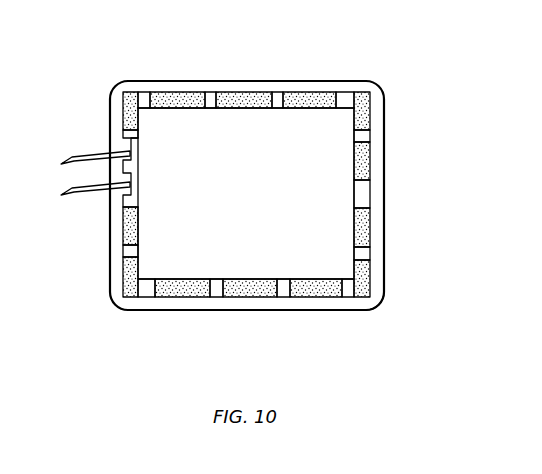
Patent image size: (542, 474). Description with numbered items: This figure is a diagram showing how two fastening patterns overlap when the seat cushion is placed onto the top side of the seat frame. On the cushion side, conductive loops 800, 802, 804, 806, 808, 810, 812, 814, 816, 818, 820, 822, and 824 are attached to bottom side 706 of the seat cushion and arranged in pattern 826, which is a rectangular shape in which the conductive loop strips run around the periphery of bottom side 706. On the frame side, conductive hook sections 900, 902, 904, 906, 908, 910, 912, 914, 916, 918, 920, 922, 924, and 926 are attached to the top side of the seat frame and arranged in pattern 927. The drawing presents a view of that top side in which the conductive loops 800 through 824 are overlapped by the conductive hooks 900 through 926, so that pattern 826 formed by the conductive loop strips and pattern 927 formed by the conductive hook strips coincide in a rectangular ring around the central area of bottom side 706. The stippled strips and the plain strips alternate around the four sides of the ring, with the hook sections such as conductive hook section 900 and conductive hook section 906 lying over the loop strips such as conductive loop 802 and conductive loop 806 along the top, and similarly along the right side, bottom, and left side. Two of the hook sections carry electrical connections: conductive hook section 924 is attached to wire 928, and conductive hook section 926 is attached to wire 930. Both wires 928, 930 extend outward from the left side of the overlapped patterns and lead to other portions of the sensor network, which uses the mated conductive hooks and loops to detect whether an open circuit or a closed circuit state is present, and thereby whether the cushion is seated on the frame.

The bottom side 706 is at (228, 208).
The conductive loop 800 is at (121, 99).
The conductive loop 802 is at (171, 92).
The conductive loop 804 is at (251, 92).
The conductive loop 806 is at (312, 92).
The conductive loop 808 is at (372, 105).
The conductive loop 810 is at (372, 160).
The conductive loop 812 is at (372, 228).
The conductive loop 814 is at (372, 282).
The conductive loop 816 is at (316, 297).
The conductive loop 818 is at (256, 297).
The conductive loop 820 is at (180, 297).
The conductive loop 822 is at (121, 280).
The conductive loop 824 is at (121, 225).
The pattern 826 is at (117, 94).
The conductive hook section 900 is at (142, 92).
The conductive hook section 902 is at (211, 92).
The conductive hook section 904 is at (276, 92).
The conductive hook section 906 is at (347, 92).
The conductive hook section 908 is at (372, 136).
The conductive hook section 910 is at (372, 192).
The conductive hook section 912 is at (372, 252).
The conductive hook section 914 is at (350, 297).
The conductive hook section 916 is at (284, 297).
The conductive hook section 918 is at (218, 297).
The conductive hook section 920 is at (147, 297).
The conductive hook section 922 is at (121, 252).
The conductive hook section 924 is at (121, 200).
The conductive hook section 926 is at (122, 138).
The pattern 927 is at (383, 293).
The wire 928 is at (63, 194).
The wire 930 is at (63, 163).